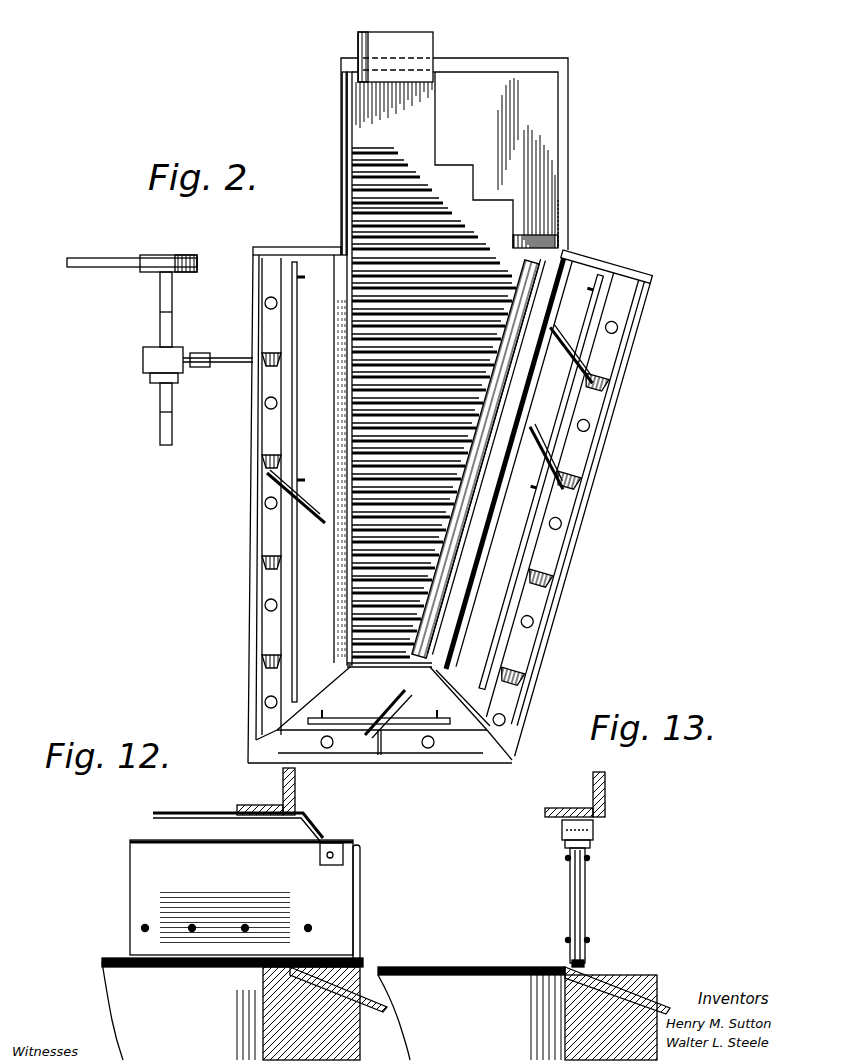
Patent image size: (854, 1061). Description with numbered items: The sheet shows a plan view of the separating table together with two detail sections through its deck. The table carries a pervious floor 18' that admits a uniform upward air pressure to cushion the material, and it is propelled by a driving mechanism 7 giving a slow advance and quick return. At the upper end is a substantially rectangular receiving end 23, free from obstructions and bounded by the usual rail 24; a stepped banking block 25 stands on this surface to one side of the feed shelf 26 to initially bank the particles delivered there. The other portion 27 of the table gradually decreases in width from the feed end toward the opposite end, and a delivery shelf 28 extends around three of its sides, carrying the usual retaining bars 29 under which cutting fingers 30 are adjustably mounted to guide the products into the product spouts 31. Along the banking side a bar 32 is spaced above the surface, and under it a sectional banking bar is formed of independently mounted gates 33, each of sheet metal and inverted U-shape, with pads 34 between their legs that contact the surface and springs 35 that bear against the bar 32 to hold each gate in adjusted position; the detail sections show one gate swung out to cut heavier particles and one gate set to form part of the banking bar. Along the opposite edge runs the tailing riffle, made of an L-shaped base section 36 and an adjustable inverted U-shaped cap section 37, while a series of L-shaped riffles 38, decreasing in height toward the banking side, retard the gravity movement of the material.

In FIG. 2, the driving mechanism 7 is at (157, 366).
In FIG. 12, the pervious floor 18' is at (244, 1011).
In FIG. 13, the pervious floor 18' is at (524, 1013).
In FIG. 2, the receiving end 23 is at (432, 160).
In FIG. 2, the rail 24 is at (568, 172).
In FIG. 2, the stepped banking block 25 is at (519, 163).
In FIG. 2, the feed shelf 26 is at (398, 44).
In FIG. 2, the separating portion of the table 27 is at (492, 458).
In FIG. 2, the delivery shelf 28 is at (450, 505).
In FIG. 2, the retaining bars 29 is at (298, 325).
In FIG. 2, the cutting fingers 30 is at (566, 326).
In FIG. 2, the product spouts 31 is at (265, 530).
In FIG. 2, the bar 32 is at (530, 393).
In FIG. 12, the bar 32 is at (296, 806).
In FIG. 13, the bar 32 is at (606, 785).
In FIG. 2, the gates 33 is at (498, 390).
In FIG. 12, the gates 33 is at (245, 900).
In FIG. 13, the gates 33 is at (586, 920).
In FIG. 12, the pads 34 is at (222, 969).
In FIG. 13, the pads 34 is at (590, 963).
In FIG. 12, the springs 35 is at (195, 815).
In FIG. 13, the springs 35 is at (595, 834).
In FIG. 2, the L-shaped base section 36 is at (341, 268).
In FIG. 2, the cap section 37 is at (346, 352).
In FIG. 2, the riffles 38 is at (487, 258).